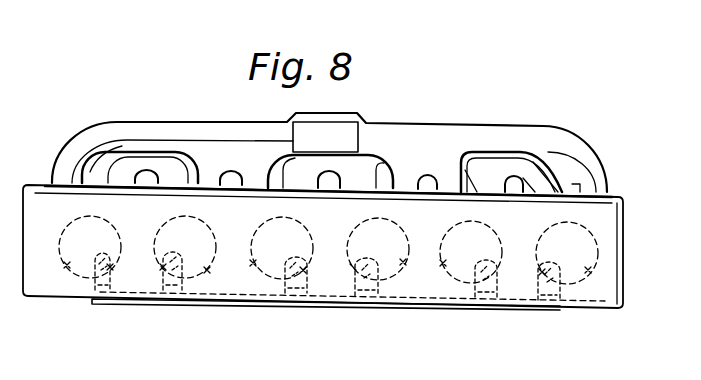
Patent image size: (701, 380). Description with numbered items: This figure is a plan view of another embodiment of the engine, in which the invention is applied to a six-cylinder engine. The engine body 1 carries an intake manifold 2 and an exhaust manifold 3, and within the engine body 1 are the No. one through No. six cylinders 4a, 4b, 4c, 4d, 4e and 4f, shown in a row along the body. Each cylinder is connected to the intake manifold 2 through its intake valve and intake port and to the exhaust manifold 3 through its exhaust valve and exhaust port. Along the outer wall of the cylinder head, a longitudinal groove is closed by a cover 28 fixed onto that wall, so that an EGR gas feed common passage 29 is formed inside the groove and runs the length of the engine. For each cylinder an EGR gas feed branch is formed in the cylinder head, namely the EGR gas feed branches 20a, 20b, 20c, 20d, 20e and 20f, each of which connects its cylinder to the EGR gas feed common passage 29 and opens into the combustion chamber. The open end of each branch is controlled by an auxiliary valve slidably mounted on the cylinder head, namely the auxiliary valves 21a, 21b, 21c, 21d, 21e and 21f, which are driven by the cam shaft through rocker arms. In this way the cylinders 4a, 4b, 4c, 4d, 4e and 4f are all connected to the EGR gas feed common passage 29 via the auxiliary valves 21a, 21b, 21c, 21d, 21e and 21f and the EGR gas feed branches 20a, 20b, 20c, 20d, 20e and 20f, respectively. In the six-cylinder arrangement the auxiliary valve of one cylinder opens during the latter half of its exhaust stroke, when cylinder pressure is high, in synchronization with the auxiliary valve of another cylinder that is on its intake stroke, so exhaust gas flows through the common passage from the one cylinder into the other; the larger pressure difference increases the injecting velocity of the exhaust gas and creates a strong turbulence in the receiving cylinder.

The engine body 1 is at (610, 224).
The intake manifold 2 is at (411, 125).
The exhaust manifold 3 is at (486, 172).
The No. 1 cylinder 4a is at (67, 265).
The No. 2 cylinder 4b is at (207, 270).
The No. 3 cylinder 4c is at (253, 265).
The No. 4 cylinder 4d is at (403, 262).
The No. 5 cylinder 4e is at (443, 265).
The No. 6 cylinder 4f is at (589, 272).
The EGR gas feed branch 20a is at (106, 292).
The EGR gas feed branch 20b is at (167, 278).
The EGR gas feed branch 20c is at (296, 292).
The EGR gas feed branch 20d is at (360, 284).
The EGR gas feed branch 20e is at (492, 295).
The EGR gas feed branch 20f is at (545, 298).
The auxiliary valve 21a is at (97, 268).
The auxiliary valve 21b is at (184, 276).
The auxiliary valve 21c is at (287, 276).
The auxiliary valve 21d is at (372, 280).
The auxiliary valve 21e is at (480, 278).
The auxiliary valve 21f is at (560, 284).
The cover 28 is at (513, 300).
The EGR gas feed common passage 29 is at (319, 300).